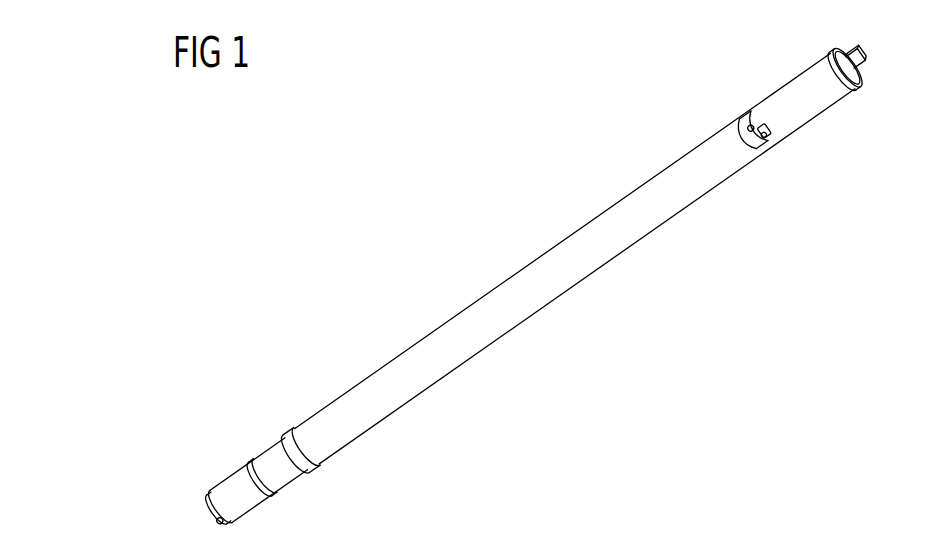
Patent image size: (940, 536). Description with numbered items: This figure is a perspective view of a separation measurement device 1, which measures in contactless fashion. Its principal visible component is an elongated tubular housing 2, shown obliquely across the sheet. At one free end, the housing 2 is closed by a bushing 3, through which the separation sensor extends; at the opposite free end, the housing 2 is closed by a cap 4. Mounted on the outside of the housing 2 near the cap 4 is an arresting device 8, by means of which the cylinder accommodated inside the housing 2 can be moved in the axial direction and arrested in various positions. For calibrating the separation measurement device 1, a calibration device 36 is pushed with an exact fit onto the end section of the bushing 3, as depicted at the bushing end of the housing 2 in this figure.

The separation measurement device 1 is at (545, 107).
The tubular housing 2 is at (450, 337).
The bushing 3 is at (270, 460).
The cap 4 is at (863, 80).
The arresting device 8 is at (747, 106).
The calibration device 36 is at (223, 472).